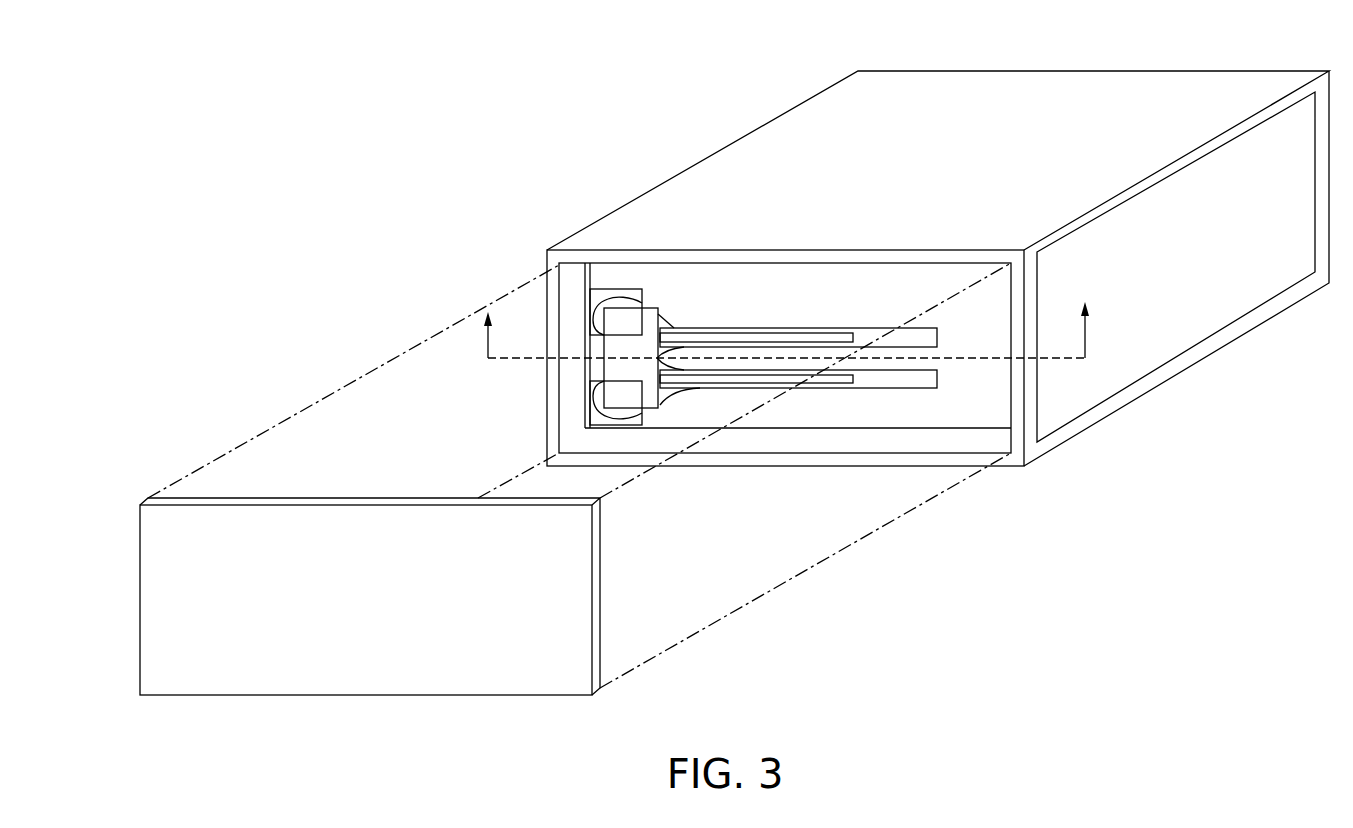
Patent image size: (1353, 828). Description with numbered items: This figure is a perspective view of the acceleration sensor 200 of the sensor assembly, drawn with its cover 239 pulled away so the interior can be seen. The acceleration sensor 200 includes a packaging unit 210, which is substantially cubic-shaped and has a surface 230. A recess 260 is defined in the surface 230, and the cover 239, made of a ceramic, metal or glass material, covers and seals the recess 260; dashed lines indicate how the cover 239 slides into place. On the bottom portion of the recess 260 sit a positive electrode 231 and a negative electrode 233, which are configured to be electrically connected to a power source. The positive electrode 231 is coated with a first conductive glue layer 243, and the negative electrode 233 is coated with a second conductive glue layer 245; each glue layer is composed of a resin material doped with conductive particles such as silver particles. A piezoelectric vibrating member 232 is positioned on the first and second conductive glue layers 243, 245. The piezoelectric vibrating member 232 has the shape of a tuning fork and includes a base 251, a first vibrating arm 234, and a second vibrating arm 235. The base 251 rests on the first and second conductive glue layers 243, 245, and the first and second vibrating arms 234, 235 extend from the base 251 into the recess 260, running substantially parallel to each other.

The acceleration sensor 200 is at (375, 120).
The packaging unit 210 is at (1132, 385).
The surface 230 is at (957, 457).
The positive electrode 231 is at (590, 300).
The piezoelectric vibrating member 232 is at (697, 310).
The negative electrode 233 is at (590, 413).
The first vibrating arm 234 is at (802, 330).
The second vibrating arm 235 is at (782, 392).
The cover 239 is at (293, 540).
The first conductive glue layer 243 is at (612, 300).
The second conductive glue layer 245 is at (618, 417).
The base 251 is at (652, 392).
The recess 260 is at (863, 403).